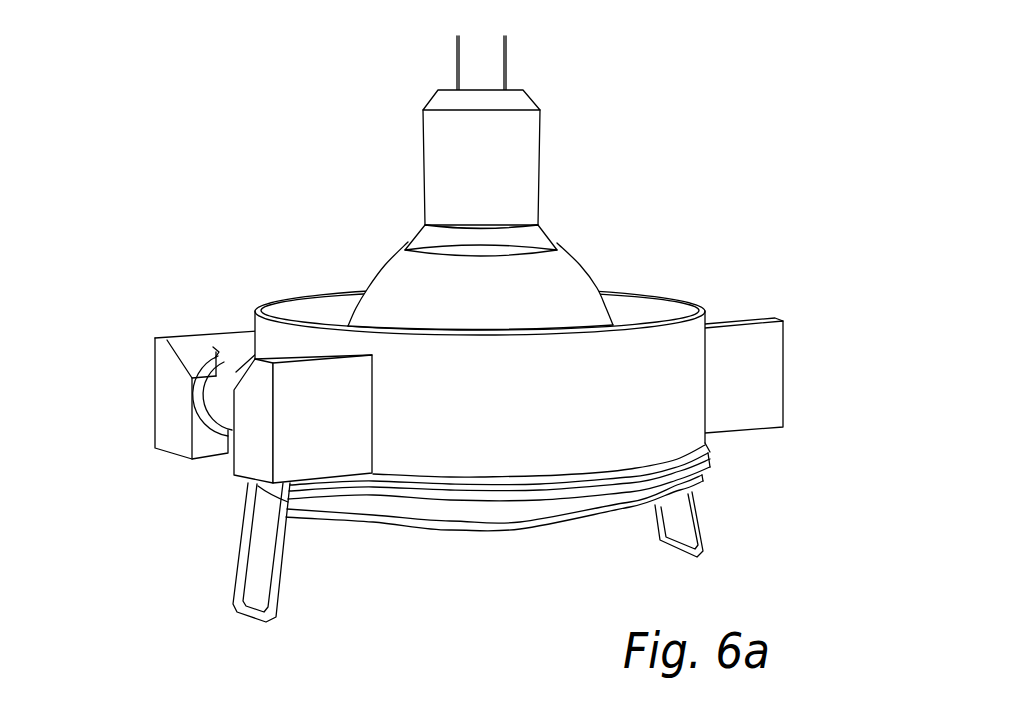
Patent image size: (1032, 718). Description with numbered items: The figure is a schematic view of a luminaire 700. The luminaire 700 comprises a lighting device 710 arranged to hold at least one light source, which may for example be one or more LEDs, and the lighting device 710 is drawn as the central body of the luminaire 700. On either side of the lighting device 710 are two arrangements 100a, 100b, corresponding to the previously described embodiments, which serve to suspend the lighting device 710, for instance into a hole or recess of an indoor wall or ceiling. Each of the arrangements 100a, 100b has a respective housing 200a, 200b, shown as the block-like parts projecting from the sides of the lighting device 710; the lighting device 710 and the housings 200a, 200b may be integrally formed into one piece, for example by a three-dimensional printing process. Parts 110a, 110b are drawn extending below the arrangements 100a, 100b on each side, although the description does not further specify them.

The luminaire 700 is at (537, 275).
The lighting device 710 is at (557, 275).
The arrangement 100a is at (220, 293).
The arrangement 100b is at (809, 334).
The housing 200a is at (155, 400).
The housing 200b is at (783, 378).
The fixing leg 110a is at (285, 587).
The fixing leg 110b is at (707, 523).